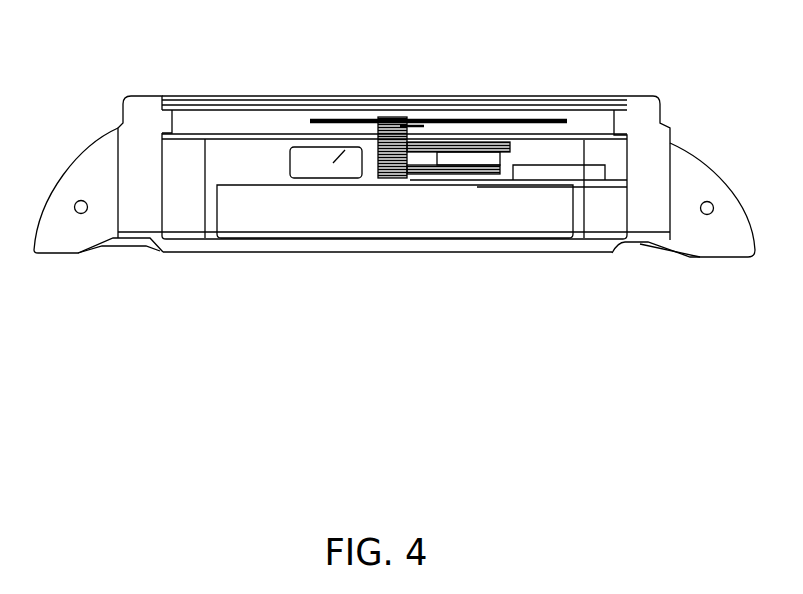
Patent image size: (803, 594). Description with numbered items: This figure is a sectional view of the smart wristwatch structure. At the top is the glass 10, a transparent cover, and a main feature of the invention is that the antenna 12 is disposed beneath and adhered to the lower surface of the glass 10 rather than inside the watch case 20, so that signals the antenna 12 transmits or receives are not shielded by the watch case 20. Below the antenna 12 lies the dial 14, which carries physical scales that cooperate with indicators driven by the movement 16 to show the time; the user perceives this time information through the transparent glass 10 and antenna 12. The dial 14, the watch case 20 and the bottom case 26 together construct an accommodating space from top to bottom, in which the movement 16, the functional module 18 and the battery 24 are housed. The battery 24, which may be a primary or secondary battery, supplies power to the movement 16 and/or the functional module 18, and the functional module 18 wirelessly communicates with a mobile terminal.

The glass 10 is at (248, 94).
The antenna 12 is at (485, 108).
The dial 14 is at (288, 137).
The movement 16 is at (335, 162).
The functional module 18 is at (575, 180).
The watch case 20 is at (137, 148).
The battery 24 is at (308, 230).
The bottom case 26 is at (447, 252).